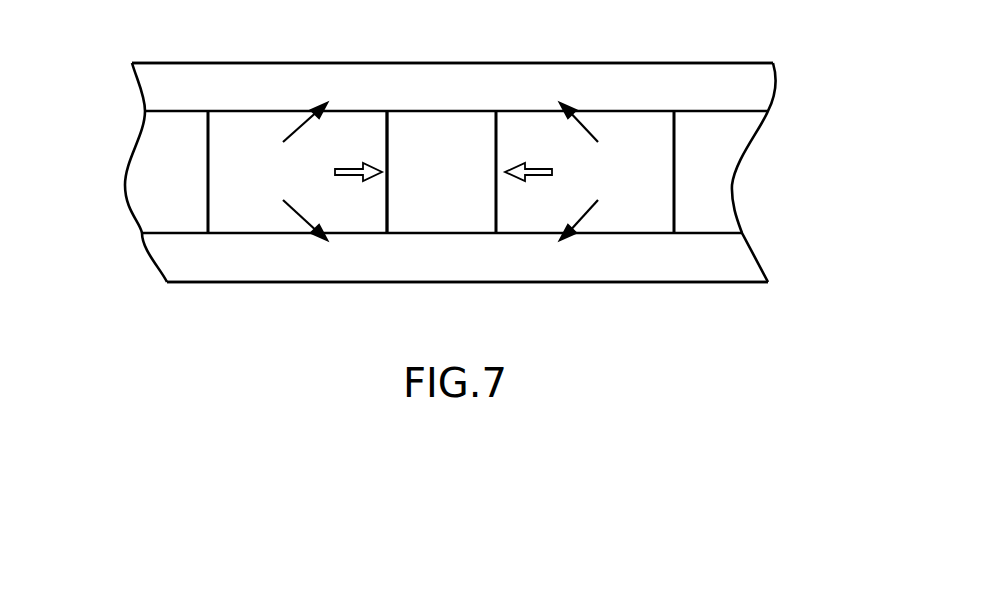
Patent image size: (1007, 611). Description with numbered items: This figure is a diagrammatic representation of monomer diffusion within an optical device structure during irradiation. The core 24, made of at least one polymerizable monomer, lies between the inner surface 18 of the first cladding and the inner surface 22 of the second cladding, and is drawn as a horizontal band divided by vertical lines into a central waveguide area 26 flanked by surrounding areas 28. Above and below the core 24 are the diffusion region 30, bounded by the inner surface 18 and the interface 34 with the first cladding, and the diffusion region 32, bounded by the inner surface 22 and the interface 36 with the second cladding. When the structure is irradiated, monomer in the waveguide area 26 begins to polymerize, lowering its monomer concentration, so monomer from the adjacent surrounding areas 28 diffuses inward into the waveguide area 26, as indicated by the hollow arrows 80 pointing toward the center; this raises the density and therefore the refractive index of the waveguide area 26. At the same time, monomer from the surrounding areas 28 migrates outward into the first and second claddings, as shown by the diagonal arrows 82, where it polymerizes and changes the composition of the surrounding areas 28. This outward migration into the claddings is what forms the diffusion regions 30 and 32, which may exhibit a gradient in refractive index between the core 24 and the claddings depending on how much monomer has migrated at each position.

The inner surface 18 is at (725, 112).
The inner surface 22 is at (727, 228).
The core 24 is at (110, 173).
The waveguide area 26 is at (442, 210).
The surrounding area 28 is at (267, 203).
The diffusion region 30 is at (765, 83).
The diffusion region 32 is at (747, 259).
The interface 34 is at (633, 63).
The interface 36 is at (673, 282).
The arrows 80 is at (347, 168).
The arrows 82 is at (302, 113).